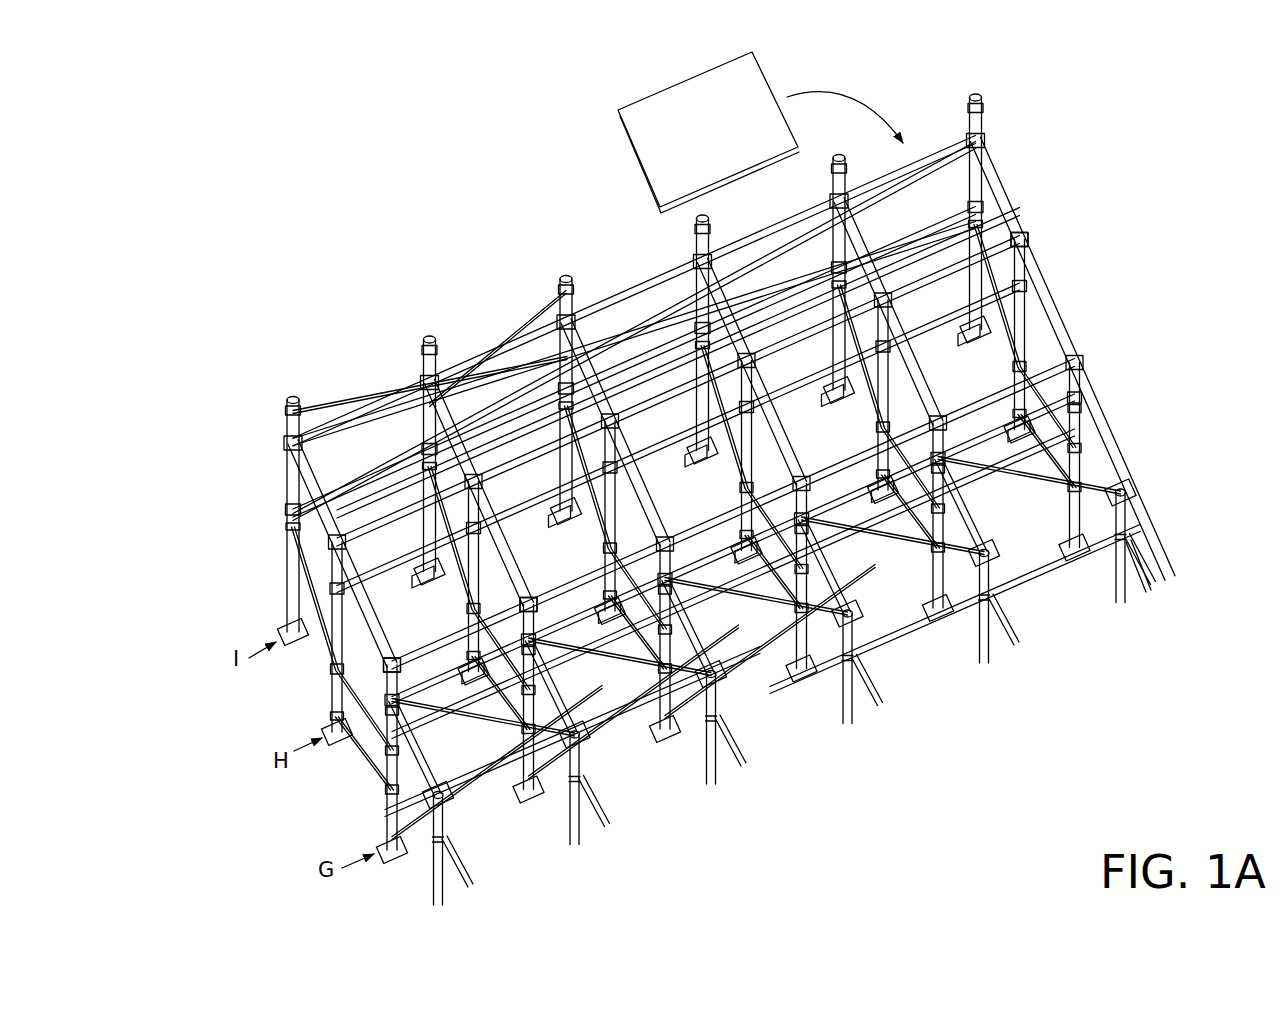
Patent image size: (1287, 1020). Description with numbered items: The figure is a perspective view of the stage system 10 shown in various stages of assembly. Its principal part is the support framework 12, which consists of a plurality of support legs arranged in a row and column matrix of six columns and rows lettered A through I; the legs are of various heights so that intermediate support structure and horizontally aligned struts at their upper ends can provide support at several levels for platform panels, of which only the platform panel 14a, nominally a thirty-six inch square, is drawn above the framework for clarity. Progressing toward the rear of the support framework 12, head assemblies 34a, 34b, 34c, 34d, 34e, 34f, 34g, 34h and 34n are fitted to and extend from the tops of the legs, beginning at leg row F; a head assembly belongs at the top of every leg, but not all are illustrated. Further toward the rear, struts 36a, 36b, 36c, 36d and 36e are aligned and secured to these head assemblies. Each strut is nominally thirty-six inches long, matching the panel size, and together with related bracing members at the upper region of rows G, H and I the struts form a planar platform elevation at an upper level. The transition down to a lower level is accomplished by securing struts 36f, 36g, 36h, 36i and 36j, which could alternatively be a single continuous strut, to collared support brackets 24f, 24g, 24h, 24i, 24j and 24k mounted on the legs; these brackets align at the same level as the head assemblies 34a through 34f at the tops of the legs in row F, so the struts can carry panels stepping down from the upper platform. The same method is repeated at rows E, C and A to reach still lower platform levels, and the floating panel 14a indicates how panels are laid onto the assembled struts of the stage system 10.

The stage system 10 is at (284, 114).
The support framework 12 is at (1158, 283).
The platform panel 14a is at (779, 64).
The collared support bracket 24f is at (390, 701).
The collared support bracket 24g is at (532, 645).
The collared support bracket 24h is at (669, 582).
The collared support bracket 24i is at (806, 521).
The collared support bracket 24j is at (944, 461).
The collared support bracket 24k is at (1088, 397).
The head assembly 34a is at (432, 794).
The head assembly 34b is at (577, 732).
The head assembly 34c is at (713, 671).
The head assembly 34d is at (849, 611).
The head assembly 34e is at (986, 550).
The head assembly 34f is at (1122, 492).
The head assembly 34g is at (390, 668).
The head assembly 34h is at (532, 600).
The head assembly 34n is at (1027, 239).
The strut 36a is at (512, 553).
The strut 36b is at (540, 452).
The strut 36c is at (400, 396).
The strut 36d is at (522, 596).
The strut 36e is at (457, 634).
The strut 36f is at (415, 822).
The strut 36g is at (592, 652).
The strut 36h is at (735, 547).
The strut 36i is at (870, 491).
The strut 36j is at (455, 362).